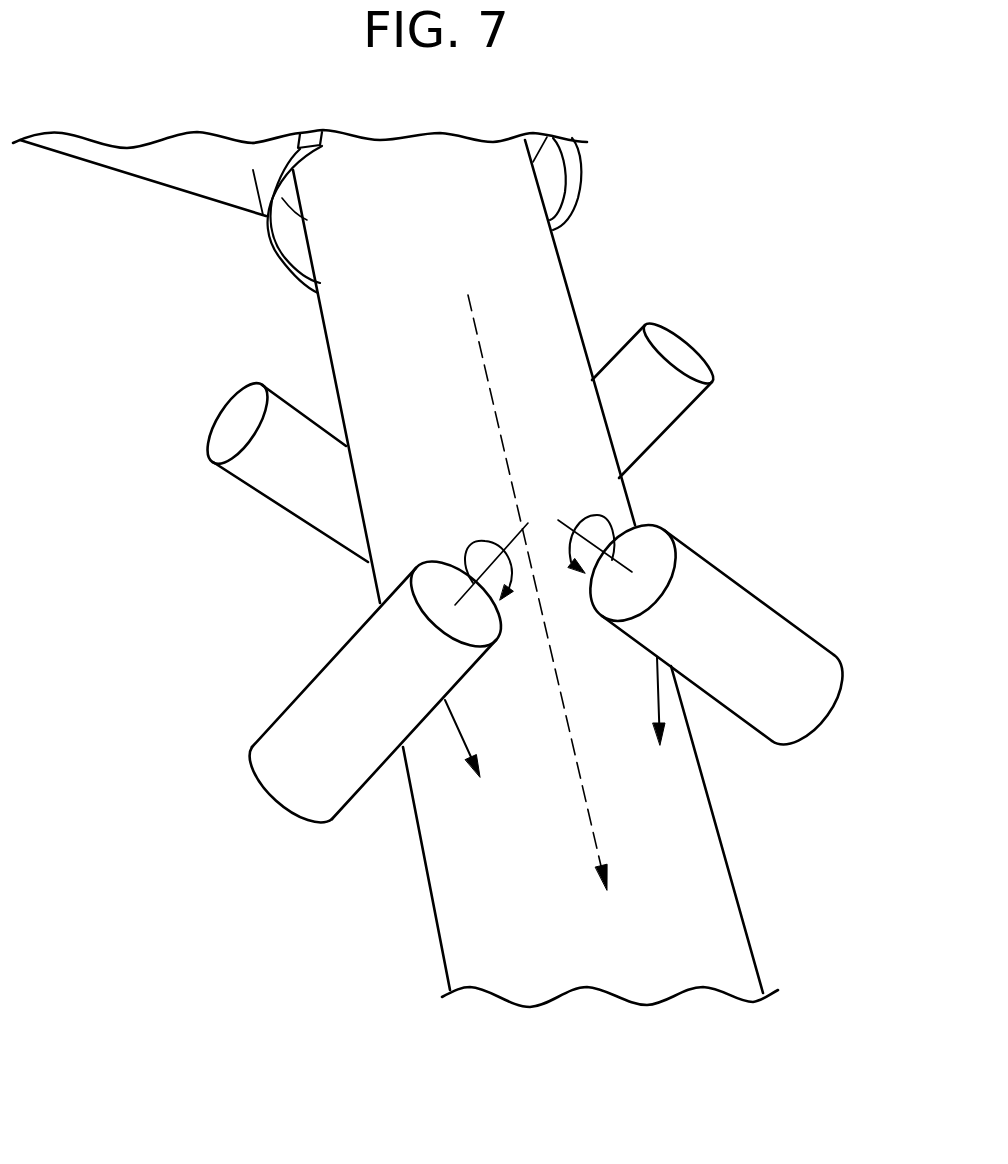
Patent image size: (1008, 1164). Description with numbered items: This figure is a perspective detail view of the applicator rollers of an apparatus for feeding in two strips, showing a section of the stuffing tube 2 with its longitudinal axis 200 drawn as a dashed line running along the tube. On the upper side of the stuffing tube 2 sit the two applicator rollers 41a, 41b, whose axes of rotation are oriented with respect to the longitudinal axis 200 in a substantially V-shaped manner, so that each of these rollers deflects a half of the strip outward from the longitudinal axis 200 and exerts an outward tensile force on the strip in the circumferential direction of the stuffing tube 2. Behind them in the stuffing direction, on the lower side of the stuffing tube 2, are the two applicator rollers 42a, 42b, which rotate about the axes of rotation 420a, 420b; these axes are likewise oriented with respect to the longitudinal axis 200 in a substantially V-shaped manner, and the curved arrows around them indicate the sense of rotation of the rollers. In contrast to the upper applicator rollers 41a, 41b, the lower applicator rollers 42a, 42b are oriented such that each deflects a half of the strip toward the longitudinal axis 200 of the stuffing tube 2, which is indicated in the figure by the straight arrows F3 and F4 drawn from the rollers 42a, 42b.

The stuffing tube 2 is at (728, 920).
The longitudinal axis 200 is at (588, 802).
The applicator roller 41a is at (228, 423).
The applicator roller 41b is at (682, 353).
The applicator roller 42a is at (265, 746).
The applicator roller 42b is at (823, 685).
The axis of rotation 420a is at (507, 540).
The axis of rotation 420b is at (558, 520).
The arrow F3 is at (453, 723).
The arrow F4 is at (661, 712).